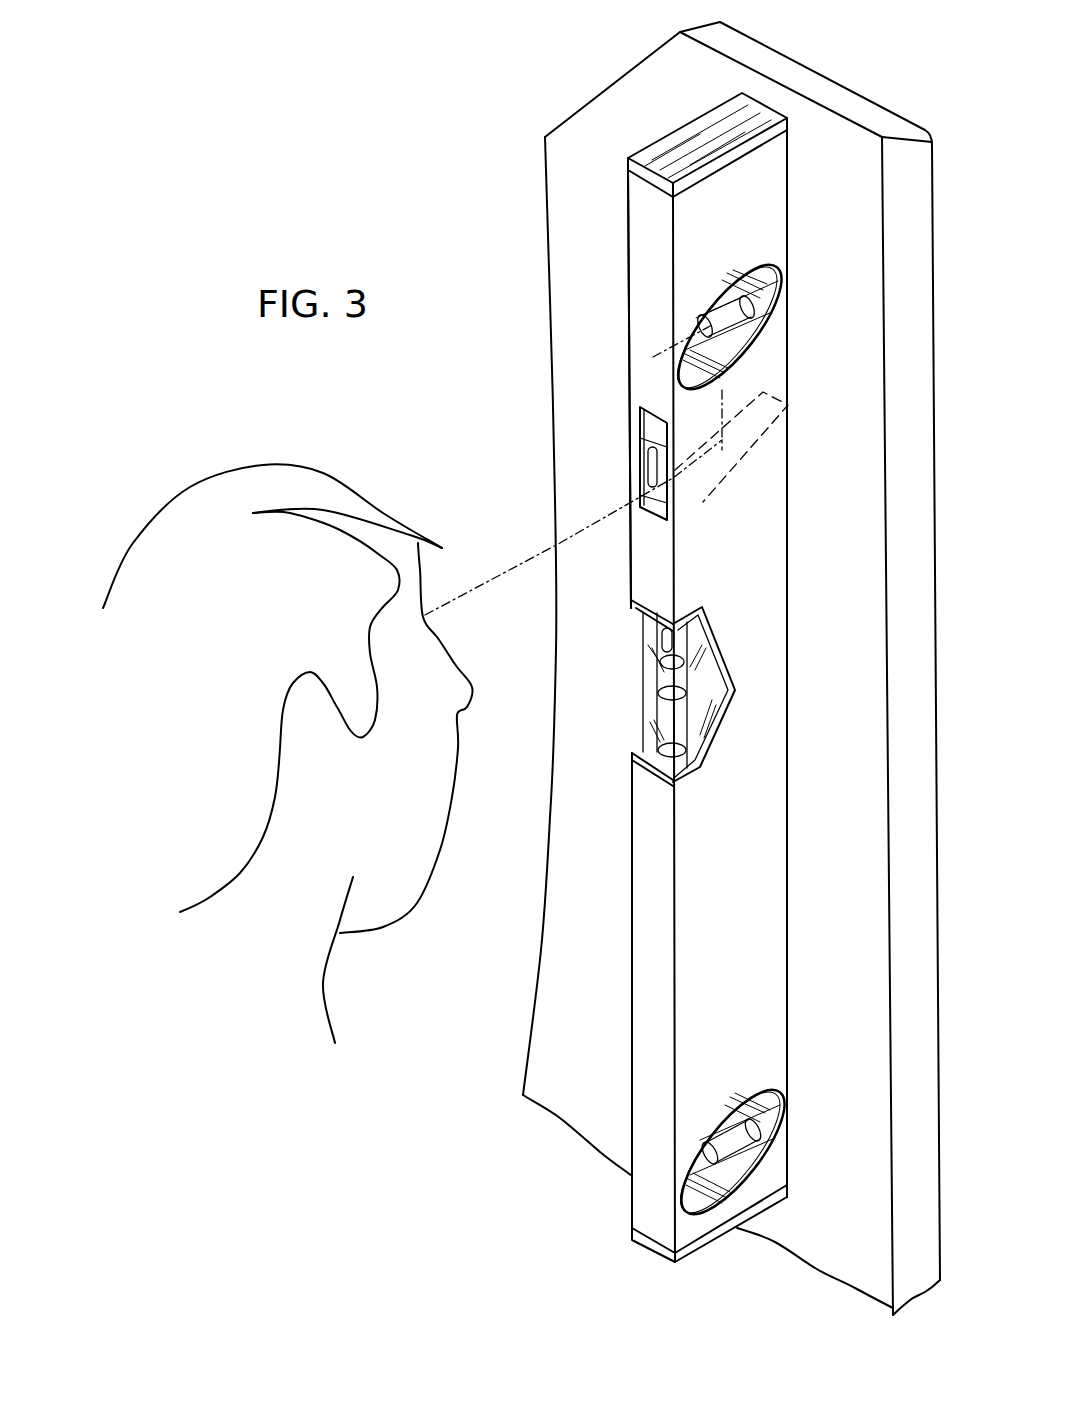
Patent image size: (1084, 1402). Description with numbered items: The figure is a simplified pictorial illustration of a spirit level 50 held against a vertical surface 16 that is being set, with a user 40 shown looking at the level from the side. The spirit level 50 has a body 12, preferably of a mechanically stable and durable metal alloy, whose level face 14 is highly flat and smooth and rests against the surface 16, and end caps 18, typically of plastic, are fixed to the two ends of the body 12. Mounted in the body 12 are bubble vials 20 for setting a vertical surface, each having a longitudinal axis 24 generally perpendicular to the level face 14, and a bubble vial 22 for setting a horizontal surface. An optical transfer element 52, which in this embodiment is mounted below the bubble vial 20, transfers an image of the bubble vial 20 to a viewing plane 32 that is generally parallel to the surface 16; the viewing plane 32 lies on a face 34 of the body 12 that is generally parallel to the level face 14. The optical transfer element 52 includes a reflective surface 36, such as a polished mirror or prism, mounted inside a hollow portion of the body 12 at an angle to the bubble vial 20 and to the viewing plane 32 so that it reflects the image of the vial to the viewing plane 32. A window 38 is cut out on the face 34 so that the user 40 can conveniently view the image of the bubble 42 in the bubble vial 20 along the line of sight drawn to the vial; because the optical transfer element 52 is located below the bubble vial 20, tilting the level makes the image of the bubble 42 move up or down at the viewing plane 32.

The body 12 is at (645, 578).
The level face 14 is at (788, 222).
The surface 16 is at (832, 128).
The end caps 18 is at (628, 160).
The bubble vial 20 is at (753, 328).
The bubble vial 22 is at (647, 672).
The longitudinal axis 24 is at (653, 357).
The viewing plane 32 is at (645, 227).
The face 34 is at (647, 422).
The reflective surface 36 is at (748, 438).
The window 38 is at (653, 508).
The user 40 is at (272, 478).
The bubble 42 is at (713, 292).
The spirit level 50 is at (513, 184).
The optical transfer element 52 is at (714, 507).